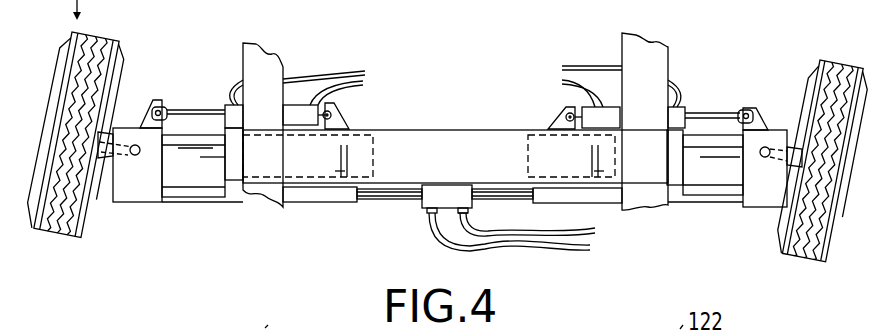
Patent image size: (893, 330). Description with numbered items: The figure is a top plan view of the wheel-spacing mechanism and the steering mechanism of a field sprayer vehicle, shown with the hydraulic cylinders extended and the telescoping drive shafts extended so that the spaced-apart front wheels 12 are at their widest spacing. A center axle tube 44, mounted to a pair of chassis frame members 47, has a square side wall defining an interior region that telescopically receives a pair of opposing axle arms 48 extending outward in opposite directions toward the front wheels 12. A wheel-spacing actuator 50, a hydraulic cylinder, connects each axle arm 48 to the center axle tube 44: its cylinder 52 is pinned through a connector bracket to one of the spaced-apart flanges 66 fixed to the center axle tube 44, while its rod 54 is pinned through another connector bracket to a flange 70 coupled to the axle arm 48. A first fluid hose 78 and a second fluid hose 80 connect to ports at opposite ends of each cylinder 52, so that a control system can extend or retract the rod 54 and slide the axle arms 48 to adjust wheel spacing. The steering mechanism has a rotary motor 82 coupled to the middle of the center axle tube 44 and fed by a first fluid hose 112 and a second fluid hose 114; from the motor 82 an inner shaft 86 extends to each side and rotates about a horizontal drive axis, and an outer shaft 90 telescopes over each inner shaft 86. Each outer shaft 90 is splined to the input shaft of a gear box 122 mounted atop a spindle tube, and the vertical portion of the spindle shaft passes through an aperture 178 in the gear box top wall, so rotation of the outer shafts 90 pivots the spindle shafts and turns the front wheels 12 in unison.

The front wheels 12 is at (842, 47).
The center axle tube 44 is at (437, 145).
The chassis frame members 47 is at (263, 67).
The axle arms 48 is at (200, 165).
The wheel-spacing actuator 50 is at (222, 85).
The cylinder 52 is at (297, 113).
The rod 54 is at (202, 110).
The flanges 66 is at (340, 117).
The flange 70 is at (145, 118).
The first fluid hose 78 is at (320, 72).
The second fluid hose 80 is at (347, 85).
The rotary motor 82 is at (414, 216).
The inner shaft 86 is at (380, 198).
The outer shaft 90 is at (312, 193).
The first fluid hose 112 is at (468, 220).
The second fluid hose 114 is at (437, 248).
The gear boxes 122 is at (152, 222).
The aperture 178 is at (139, 156).